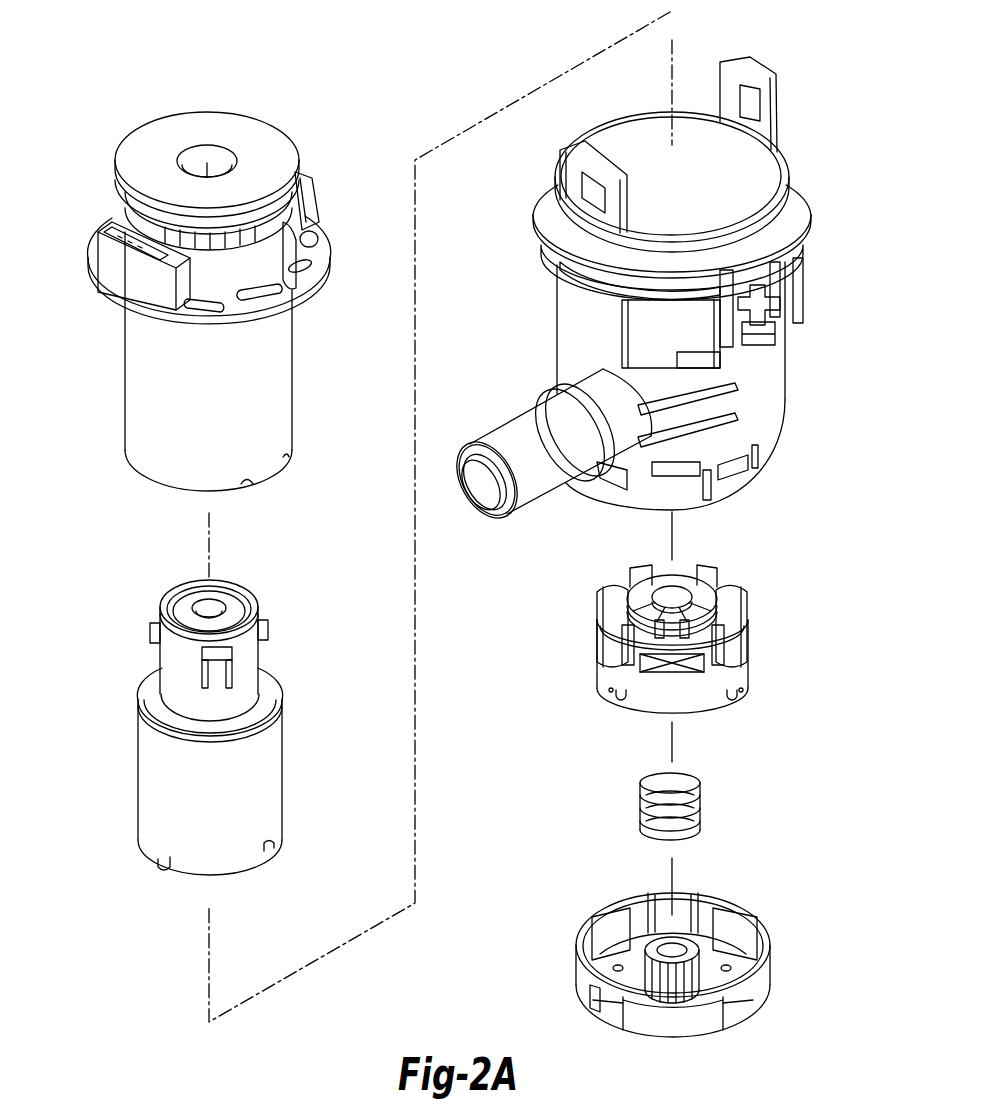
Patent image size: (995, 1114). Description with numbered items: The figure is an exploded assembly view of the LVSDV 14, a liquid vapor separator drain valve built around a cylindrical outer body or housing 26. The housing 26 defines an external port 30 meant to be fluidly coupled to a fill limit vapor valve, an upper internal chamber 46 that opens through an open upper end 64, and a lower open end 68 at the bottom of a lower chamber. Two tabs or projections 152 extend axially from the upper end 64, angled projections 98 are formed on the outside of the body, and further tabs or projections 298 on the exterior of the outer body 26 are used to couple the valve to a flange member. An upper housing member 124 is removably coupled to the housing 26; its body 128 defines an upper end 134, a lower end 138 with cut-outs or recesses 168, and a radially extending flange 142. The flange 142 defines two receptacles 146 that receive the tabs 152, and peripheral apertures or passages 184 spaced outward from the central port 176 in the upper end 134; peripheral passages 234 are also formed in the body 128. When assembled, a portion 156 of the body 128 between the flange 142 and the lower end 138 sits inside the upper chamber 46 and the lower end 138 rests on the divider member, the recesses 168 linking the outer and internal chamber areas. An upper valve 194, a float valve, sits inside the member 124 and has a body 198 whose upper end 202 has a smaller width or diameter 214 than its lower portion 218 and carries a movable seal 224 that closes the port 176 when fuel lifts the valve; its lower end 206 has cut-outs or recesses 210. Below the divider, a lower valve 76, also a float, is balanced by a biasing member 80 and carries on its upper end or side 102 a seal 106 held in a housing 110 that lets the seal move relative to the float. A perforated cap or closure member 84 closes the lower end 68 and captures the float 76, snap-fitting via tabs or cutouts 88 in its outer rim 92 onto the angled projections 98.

The LVSDV 14 is at (195, 309).
The upper end 134 is at (175, 130).
The central opening or port 176 is at (220, 140).
The peripheral apertures or passages 184 is at (309, 232).
The receptacles 146 is at (120, 275).
The peripheral passages 234 is at (200, 251).
The radially extending flange 142 is at (197, 318).
The upper housing member 124 is at (200, 396).
The portion 156 is at (140, 350).
The body 128 is at (280, 340).
The lower end 138 is at (160, 487).
The cut-outs or recesses 168 is at (245, 485).
The upper valve 194 is at (207, 715).
The seal 224 is at (187, 590).
The smaller width or diameter 214 is at (185, 688).
The upper end 202 is at (218, 690).
The body 198 is at (165, 780).
The lower portion 218 is at (270, 800).
The lower end 206 is at (140, 870).
The cut-outs or recesses 210 is at (165, 866).
The outer body or housing 26 is at (654, 281).
The open upper end 64 is at (790, 166).
The tabs or projections 152 is at (748, 80).
The upper internal chamber 46 is at (695, 160).
The tabs or projections 298 is at (775, 310).
The external port 30 is at (507, 435).
The angled projections 98 is at (745, 478).
The lower open end 68 is at (620, 497).
The lower valve 76 is at (676, 627).
The upper end or side 102 is at (740, 605).
The seal 106 is at (690, 582).
The housing 110 is at (720, 625).
The biasing member 80 is at (705, 805).
The cap or closure member 84 is at (687, 985).
The outer rim 92 is at (585, 982).
The tabs or cutouts 88 is at (600, 1000).